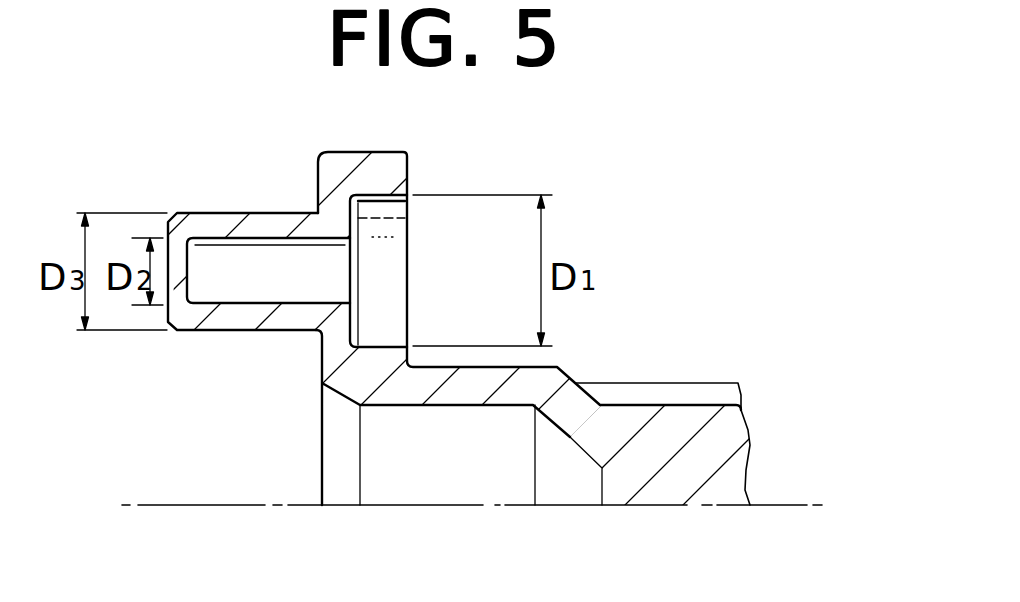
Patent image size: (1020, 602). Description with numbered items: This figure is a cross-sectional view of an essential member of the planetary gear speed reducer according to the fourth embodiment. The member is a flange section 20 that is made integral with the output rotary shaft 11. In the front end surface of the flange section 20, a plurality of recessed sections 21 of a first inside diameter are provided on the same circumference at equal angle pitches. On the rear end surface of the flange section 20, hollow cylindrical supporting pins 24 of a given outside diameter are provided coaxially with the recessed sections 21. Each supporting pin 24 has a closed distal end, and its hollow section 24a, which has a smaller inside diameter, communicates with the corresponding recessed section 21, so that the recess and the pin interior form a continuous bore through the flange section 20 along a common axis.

The output rotary shaft 11 is at (723, 438).
The flange section 20 is at (386, 170).
The recessed section 21 is at (382, 259).
The hollow cylindrical supporting pin 24 is at (213, 224).
The hollow section 24a is at (282, 290).